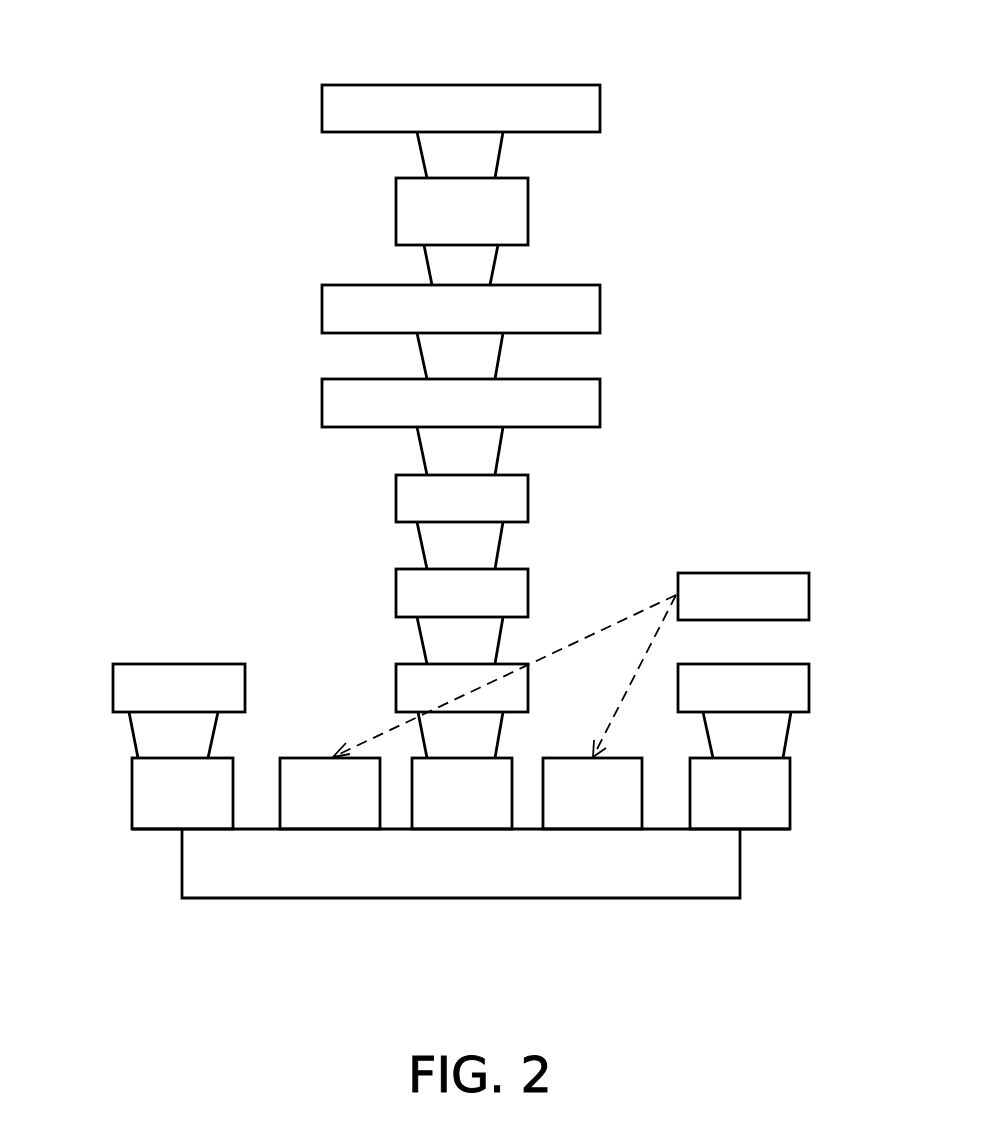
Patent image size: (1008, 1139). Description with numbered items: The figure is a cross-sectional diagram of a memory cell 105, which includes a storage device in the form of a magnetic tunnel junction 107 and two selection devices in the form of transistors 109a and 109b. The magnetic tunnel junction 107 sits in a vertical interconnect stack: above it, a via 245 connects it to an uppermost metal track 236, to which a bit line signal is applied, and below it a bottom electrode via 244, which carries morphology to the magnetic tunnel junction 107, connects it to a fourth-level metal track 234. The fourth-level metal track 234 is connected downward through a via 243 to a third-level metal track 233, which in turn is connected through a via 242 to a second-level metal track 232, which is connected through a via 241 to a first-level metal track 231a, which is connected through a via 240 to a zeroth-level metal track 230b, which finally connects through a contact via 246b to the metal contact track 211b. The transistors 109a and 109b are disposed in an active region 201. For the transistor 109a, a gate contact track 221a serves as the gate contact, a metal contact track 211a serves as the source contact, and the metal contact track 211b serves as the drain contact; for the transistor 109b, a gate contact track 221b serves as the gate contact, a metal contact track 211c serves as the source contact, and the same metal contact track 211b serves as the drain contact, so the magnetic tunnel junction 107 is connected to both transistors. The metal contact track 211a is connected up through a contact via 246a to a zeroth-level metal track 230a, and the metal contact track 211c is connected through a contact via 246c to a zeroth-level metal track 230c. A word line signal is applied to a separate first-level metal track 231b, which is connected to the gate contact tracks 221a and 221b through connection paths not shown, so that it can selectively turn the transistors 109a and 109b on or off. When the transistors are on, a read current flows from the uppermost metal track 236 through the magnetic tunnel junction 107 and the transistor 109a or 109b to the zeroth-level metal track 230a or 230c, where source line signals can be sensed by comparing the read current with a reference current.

The memory cell 105 is at (190, 90).
The metal track M6 236 is at (601, 108).
The via V5 245 is at (499, 155).
The magnetic tunnel junction (MTJ) 107 is at (529, 213).
The bottom electrode via (BEVA) 244 is at (494, 265).
The metal track M4 234 is at (601, 309).
The via V3 243 is at (499, 356).
The metal track M3 233 is at (601, 403).
The via V2 242 is at (499, 450).
The metal track M2 232 is at (529, 499).
The via V1 241 is at (499, 545).
The metal track M1 231a is at (529, 593).
The via V0 240 is at (499, 640).
The metal track M0 230a is at (112, 688).
The metal track M0 230b is at (529, 688).
The metal track M0 230c is at (810, 688).
The via VD 246a is at (130, 737).
The via VD 246b is at (500, 735).
The via VD 246c is at (788, 735).
The metal contact track 211a is at (130, 795).
The metal contact track MD 211b is at (457, 829).
The metal contact track 211c is at (791, 795).
The metal track M1 231b is at (810, 593).
The active region 201 is at (741, 862).
The gate contact (MG) track 221a is at (332, 829).
The gate contact track 221b is at (593, 829).
The transistor 109a is at (355, 870).
The transistor 109b is at (565, 870).